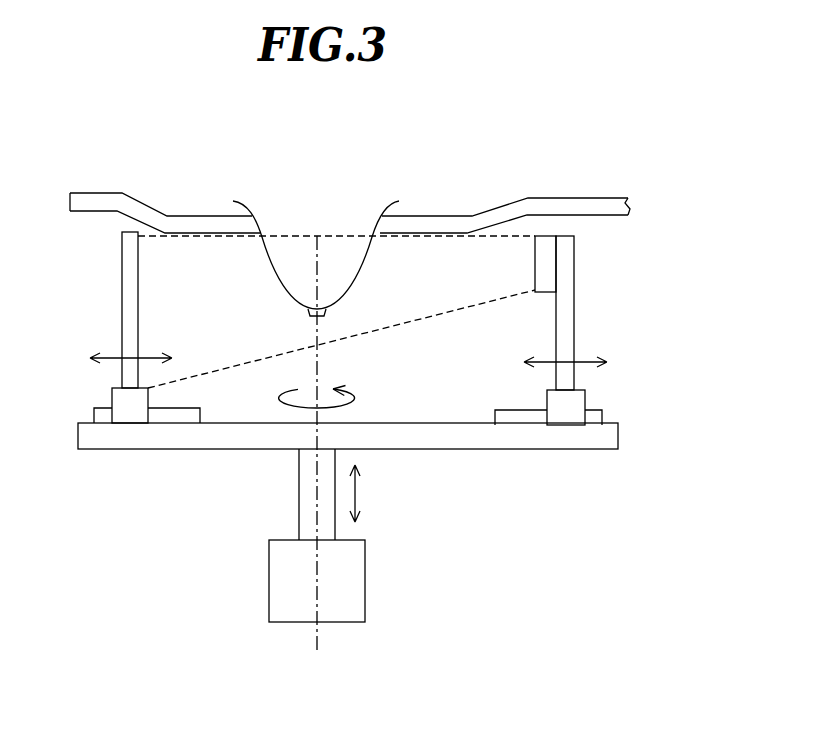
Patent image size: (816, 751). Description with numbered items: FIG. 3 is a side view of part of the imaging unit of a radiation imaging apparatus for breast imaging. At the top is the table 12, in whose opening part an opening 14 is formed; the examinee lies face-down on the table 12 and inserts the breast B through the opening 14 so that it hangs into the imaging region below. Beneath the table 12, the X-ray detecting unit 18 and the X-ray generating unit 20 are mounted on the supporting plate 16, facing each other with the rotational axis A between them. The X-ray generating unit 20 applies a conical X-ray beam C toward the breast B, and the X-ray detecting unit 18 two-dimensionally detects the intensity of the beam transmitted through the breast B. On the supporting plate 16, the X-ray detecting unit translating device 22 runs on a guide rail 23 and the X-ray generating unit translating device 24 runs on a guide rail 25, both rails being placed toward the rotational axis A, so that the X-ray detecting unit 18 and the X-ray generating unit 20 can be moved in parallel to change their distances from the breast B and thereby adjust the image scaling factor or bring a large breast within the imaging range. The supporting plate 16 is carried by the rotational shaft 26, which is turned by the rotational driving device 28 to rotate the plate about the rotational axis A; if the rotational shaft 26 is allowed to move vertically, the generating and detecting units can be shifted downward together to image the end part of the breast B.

The table 12 is at (98, 202).
The opening 14 is at (275, 222).
The supporting plate 16 is at (507, 442).
The X-ray detecting unit 18 is at (127, 262).
The X-ray generating unit 20 is at (547, 243).
The X-ray detecting unit translating device 22 is at (128, 417).
The guide rail 23 is at (102, 412).
The X-ray generating unit translating device 24 is at (580, 403).
The guide rail 25 is at (597, 420).
The rotational shaft 26 is at (300, 482).
The rotational driving device 28 is at (367, 583).
The rotational axis A is at (317, 461).
The breast B is at (347, 243).
The X-ray beam C is at (487, 233).